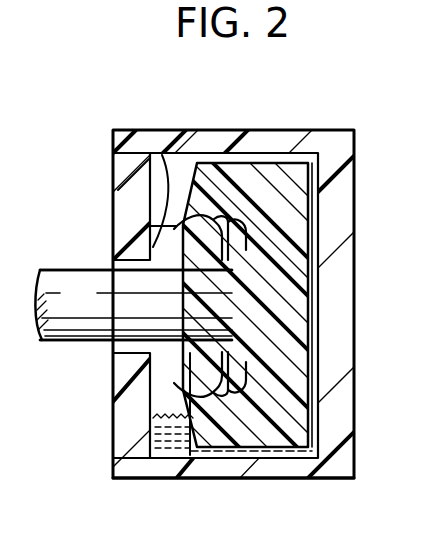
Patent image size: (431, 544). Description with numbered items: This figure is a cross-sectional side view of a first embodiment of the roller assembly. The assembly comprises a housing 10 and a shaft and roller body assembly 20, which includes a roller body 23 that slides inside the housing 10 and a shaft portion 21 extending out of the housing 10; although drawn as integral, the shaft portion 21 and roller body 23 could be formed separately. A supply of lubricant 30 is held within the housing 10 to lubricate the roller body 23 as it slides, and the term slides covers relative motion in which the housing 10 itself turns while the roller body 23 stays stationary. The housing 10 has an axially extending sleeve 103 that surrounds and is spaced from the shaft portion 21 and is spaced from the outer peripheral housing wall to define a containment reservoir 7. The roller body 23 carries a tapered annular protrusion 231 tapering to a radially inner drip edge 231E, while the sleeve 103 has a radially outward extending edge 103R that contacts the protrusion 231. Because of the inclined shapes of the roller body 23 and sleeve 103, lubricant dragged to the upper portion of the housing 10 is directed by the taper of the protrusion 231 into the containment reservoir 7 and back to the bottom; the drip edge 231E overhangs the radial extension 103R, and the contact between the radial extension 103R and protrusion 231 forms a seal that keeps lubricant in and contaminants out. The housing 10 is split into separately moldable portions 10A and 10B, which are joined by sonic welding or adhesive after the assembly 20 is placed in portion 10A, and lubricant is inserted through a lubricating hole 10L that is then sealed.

The housing 10 is at (340, 205).
The lubricating hole 10L is at (219, 130).
The housing portion 10B is at (336, 407).
The housing portion 10A is at (126, 411).
The roller body 23 is at (287, 199).
The shaft portion 21 is at (93, 307).
The shaft and roller body assembly 20 is at (104, 346).
The axially extending sleeve 103 is at (208, 254).
The radially outward extending edge 103R is at (232, 221).
The tapered annular protrusion 231 is at (153, 247).
The drip edge 231E is at (120, 197).
The containment reservoir 7 is at (173, 404).
The supply of lubricant 30 is at (181, 478).